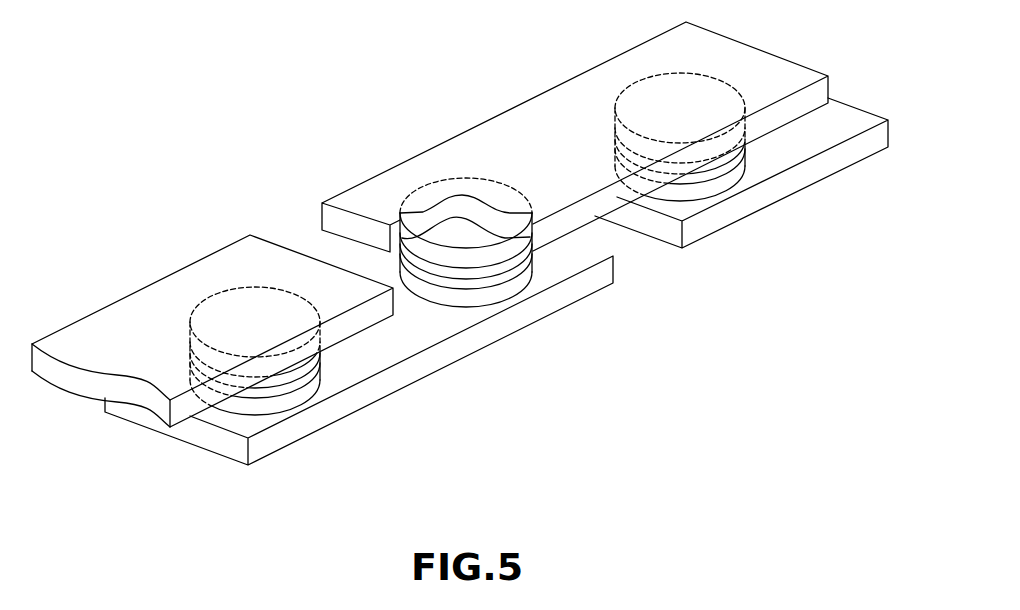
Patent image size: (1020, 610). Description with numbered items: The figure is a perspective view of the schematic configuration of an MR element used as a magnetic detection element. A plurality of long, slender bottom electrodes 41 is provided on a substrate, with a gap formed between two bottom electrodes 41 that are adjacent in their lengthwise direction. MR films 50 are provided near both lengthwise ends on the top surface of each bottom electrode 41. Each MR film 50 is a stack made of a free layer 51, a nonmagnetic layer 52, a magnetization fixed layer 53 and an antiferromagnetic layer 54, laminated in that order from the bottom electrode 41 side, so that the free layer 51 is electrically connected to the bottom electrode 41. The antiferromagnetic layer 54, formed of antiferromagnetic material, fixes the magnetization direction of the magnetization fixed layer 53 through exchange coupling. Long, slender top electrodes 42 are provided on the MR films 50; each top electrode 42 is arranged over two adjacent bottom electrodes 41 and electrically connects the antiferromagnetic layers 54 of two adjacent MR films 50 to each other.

The bottom electrode 41 is at (455, 353).
The top electrode 42 is at (97, 309).
The MR film 50 is at (327, 356).
The free layer 51 is at (318, 383).
The nonmagnetic layer 52 is at (297, 392).
The magnetization fixed layer 53 is at (243, 403).
The antiferromagnetic layer 54 is at (200, 298).